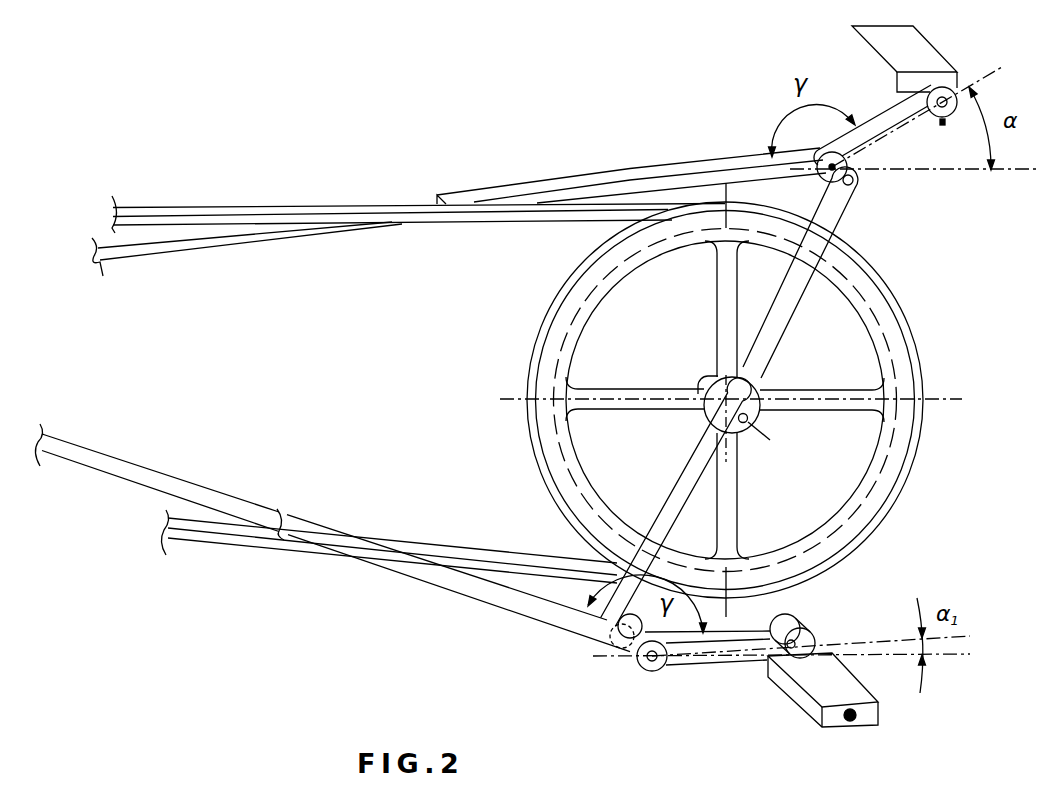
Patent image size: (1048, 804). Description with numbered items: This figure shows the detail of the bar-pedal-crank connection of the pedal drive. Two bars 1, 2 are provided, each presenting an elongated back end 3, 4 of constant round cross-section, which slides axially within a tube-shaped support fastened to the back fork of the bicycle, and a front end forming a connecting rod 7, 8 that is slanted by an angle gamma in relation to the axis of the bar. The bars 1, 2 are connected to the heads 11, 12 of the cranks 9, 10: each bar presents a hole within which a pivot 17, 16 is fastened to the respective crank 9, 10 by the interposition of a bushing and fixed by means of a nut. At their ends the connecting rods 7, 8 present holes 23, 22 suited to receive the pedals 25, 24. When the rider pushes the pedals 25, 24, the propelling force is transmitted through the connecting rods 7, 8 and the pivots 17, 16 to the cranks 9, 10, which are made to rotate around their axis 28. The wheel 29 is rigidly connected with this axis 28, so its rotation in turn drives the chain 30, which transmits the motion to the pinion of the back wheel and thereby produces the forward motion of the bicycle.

The bar 1 is at (640, 153).
The bar 2 is at (460, 610).
The elongated back end 3 is at (245, 235).
The elongated back end 4 is at (187, 490).
The connecting rod 7 is at (878, 120).
The connecting rod 8 is at (729, 645).
The crank 9 is at (773, 310).
The crank 10 is at (705, 483).
The head of the crank 11 is at (866, 188).
The head of the crank 12 is at (635, 667).
The pivot 16 is at (651, 661).
The pivot 17 is at (855, 188).
The hole 22 is at (800, 643).
The hole 23 is at (943, 110).
The pedal 24 is at (840, 683).
The pedal 25 is at (888, 43).
The axis 28 is at (700, 373).
The wheel 29 is at (878, 312).
The chain 30 is at (310, 217).